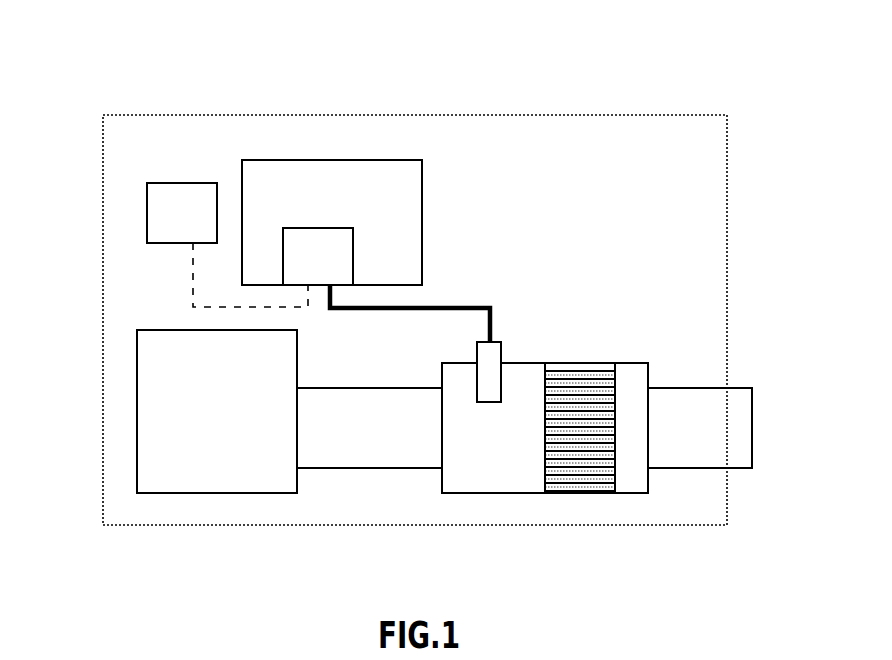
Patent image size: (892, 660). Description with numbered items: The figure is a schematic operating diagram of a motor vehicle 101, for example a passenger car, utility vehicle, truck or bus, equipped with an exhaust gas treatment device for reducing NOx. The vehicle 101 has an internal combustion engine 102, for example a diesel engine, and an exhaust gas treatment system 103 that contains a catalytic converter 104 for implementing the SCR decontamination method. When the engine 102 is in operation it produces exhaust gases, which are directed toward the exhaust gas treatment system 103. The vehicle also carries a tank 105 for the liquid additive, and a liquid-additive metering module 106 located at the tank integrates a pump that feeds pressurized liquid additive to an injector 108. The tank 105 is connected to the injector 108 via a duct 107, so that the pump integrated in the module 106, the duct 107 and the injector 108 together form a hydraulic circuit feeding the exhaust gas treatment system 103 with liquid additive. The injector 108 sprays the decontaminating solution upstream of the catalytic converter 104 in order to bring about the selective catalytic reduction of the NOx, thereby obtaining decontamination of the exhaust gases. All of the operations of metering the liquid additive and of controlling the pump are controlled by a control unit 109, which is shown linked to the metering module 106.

The motor vehicle 101 is at (730, 86).
The internal combustion engine 102 is at (158, 328).
The exhaust gas treatment system 103 is at (637, 363).
The catalytic converter 104 is at (618, 473).
The tank 105 is at (422, 192).
The liquid-additive metering module 106 is at (330, 227).
The duct 107 is at (457, 307).
The injector 108 is at (501, 345).
The control unit 109 is at (182, 183).